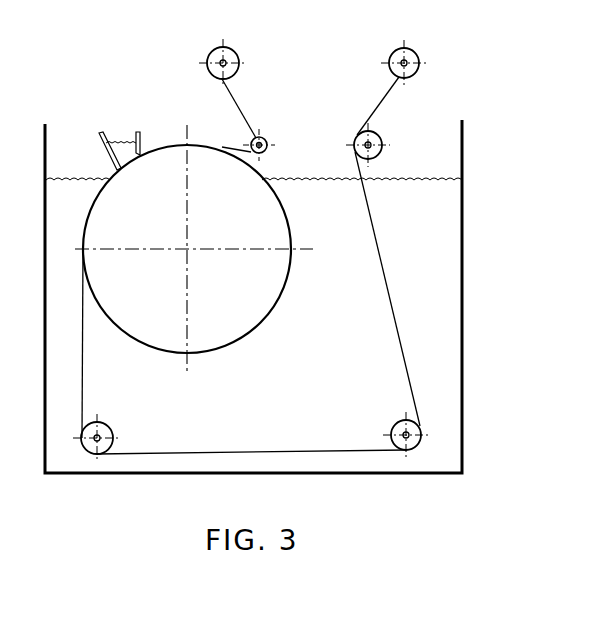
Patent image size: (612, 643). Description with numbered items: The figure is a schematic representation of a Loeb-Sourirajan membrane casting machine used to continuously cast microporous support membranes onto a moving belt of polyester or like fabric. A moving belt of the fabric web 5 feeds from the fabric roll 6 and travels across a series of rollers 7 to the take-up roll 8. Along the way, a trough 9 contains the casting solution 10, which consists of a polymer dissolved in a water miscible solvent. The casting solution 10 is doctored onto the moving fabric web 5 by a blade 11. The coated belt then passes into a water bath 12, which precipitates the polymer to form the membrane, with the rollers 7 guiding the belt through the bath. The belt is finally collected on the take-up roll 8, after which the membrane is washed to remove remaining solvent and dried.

The fabric web 5 is at (375, 107).
The fabric roll 6 is at (227, 51).
The rollers 7 is at (264, 136).
The take-up roll 8 is at (406, 50).
The trough 9 is at (146, 128).
The casting solution 10 is at (118, 137).
The blade 11 is at (100, 136).
The water bath 12 is at (444, 269).